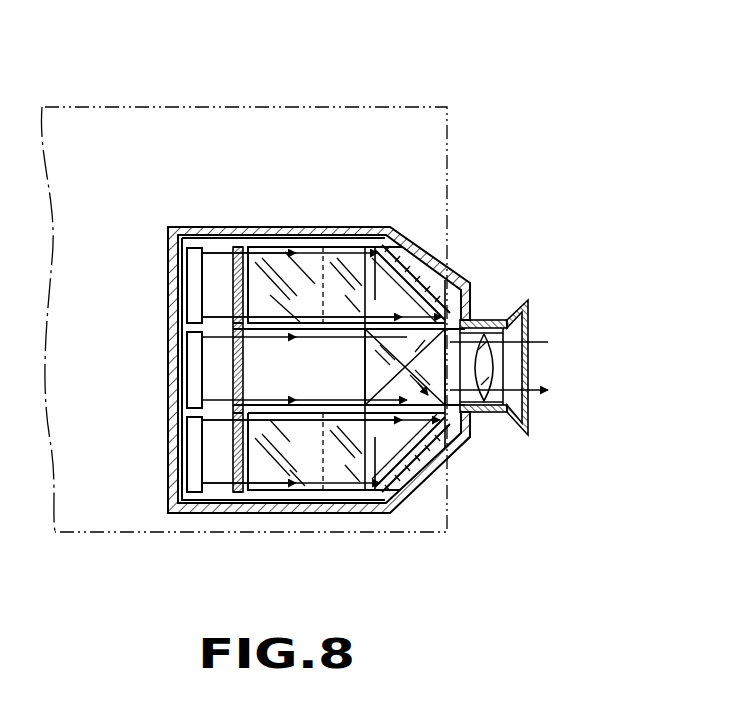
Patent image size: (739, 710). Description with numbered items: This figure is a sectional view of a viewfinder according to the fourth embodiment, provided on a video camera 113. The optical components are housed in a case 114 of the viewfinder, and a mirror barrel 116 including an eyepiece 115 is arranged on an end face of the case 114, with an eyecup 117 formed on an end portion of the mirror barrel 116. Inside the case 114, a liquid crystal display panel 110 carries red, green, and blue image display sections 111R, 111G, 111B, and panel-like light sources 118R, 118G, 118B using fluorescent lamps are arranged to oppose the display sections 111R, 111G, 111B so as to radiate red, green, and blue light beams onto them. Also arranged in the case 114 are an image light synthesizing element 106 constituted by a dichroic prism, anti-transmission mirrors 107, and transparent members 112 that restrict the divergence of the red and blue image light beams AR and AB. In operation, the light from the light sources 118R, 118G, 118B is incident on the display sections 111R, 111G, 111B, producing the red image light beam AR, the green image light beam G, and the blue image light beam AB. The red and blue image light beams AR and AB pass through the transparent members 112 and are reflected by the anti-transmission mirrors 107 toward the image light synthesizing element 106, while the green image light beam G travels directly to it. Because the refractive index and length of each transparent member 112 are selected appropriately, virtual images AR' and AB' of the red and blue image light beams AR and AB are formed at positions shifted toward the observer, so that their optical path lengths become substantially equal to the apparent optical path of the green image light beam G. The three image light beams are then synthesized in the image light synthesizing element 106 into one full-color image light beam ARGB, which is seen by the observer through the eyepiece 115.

The video camera 113 is at (408, 107).
The anti-transmission mirror 107 is at (450, 272).
The liquid crystal display panel 110 is at (230, 243).
The red image display section 111R is at (265, 262).
The green image display section 111G is at (243, 388).
The blue image display section 111B is at (232, 456).
The transparent member 112 is at (325, 255).
The red light source 118R is at (192, 280).
The green light source 118G is at (192, 363).
The blue light source 118B is at (192, 447).
The red image light beam AR is at (412, 258).
The virtual image of the red image light beam AR' is at (383, 234).
The blue image light beam AB is at (417, 497).
The virtual image of the blue image light beam AB' is at (383, 497).
The green image light beam G is at (350, 340).
The case 114 is at (468, 318).
The mirror barrel 116 is at (490, 413).
The image light synthesizing element 106 is at (458, 305).
The eyepiece 115 is at (487, 370).
The eyecup 117 is at (525, 425).
The full-color image light beam ARGB is at (525, 320).